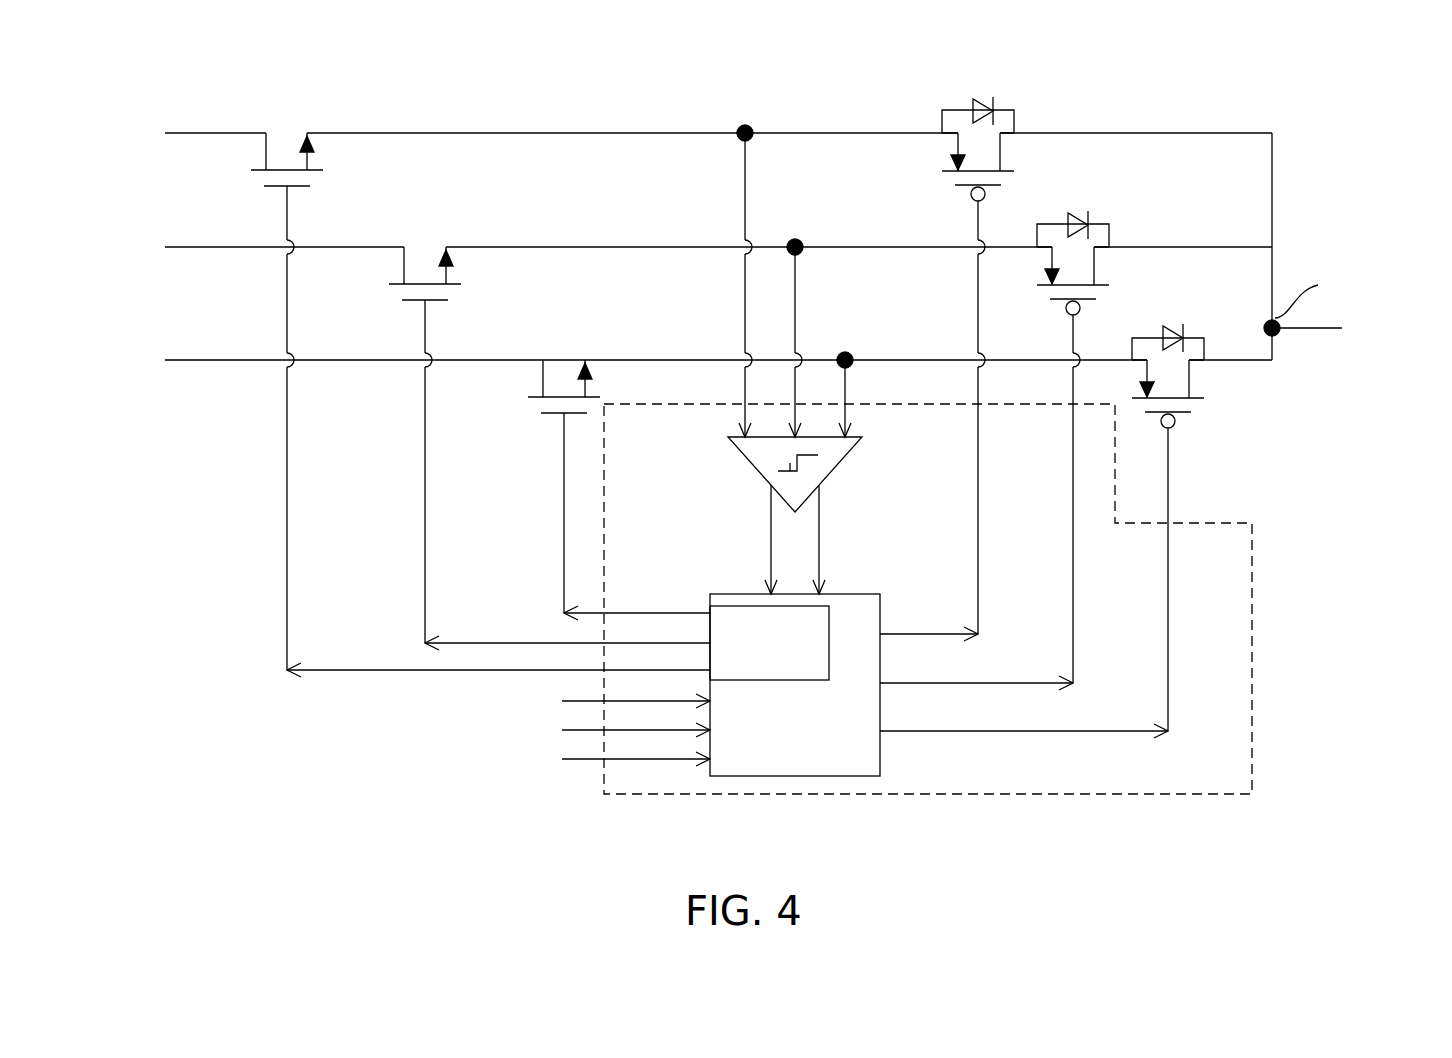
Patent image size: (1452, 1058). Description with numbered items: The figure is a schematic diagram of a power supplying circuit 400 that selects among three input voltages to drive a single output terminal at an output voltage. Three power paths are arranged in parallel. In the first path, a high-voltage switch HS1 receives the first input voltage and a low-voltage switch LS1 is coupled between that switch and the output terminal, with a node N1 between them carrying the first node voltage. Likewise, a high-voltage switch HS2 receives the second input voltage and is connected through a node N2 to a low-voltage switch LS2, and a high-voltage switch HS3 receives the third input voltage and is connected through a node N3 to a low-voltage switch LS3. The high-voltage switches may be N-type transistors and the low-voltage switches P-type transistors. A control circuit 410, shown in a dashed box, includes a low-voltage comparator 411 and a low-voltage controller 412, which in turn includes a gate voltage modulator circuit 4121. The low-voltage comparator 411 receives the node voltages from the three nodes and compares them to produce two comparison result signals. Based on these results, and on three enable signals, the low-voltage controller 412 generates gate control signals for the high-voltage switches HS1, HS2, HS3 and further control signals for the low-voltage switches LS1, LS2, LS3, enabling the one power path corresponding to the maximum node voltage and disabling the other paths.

The power supplying circuit 400 is at (113, 53).
The control circuit 410 is at (1252, 610).
The low-voltage comparator 411 is at (830, 479).
The low-voltage controller 412 is at (818, 741).
The gate voltage modulator circuit 4121 is at (803, 658).
The node N1 is at (755, 128).
The node N2 is at (805, 242).
The node N3 is at (855, 355).
The high-voltage switch HS1 is at (259, 164).
The high-voltage switch HS2 is at (395, 278).
The high-voltage switch HS3 is at (533, 391).
The low-voltage switch LS1 is at (1010, 149).
The low-voltage switch LS2 is at (1107, 263).
The low-voltage switch LS3 is at (1202, 376).